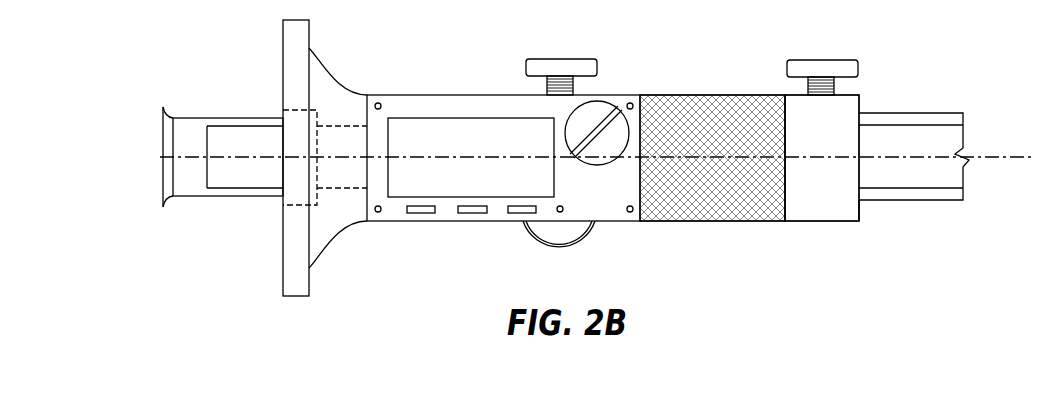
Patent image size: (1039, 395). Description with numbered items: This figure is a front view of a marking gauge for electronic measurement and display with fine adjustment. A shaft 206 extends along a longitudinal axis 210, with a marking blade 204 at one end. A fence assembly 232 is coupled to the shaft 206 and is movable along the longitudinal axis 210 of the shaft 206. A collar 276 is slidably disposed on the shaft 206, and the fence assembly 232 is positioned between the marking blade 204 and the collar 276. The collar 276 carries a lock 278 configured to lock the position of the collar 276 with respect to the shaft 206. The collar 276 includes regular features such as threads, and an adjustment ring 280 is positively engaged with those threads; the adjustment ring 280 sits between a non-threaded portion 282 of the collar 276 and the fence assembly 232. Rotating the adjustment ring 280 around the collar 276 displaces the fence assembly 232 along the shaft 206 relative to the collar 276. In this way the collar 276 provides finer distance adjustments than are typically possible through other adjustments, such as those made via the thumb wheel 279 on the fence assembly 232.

The marking blade 204 is at (163, 132).
The shaft 206 is at (930, 112).
The longitudinal axis 210 is at (1010, 156).
The fence assembly 232 is at (427, 95).
The collar 276 is at (860, 215).
The lock 278 is at (820, 58).
The thumb wheel 279 is at (567, 246).
The adjustment ring 280 is at (727, 93).
The non-threaded portion 282 is at (832, 217).